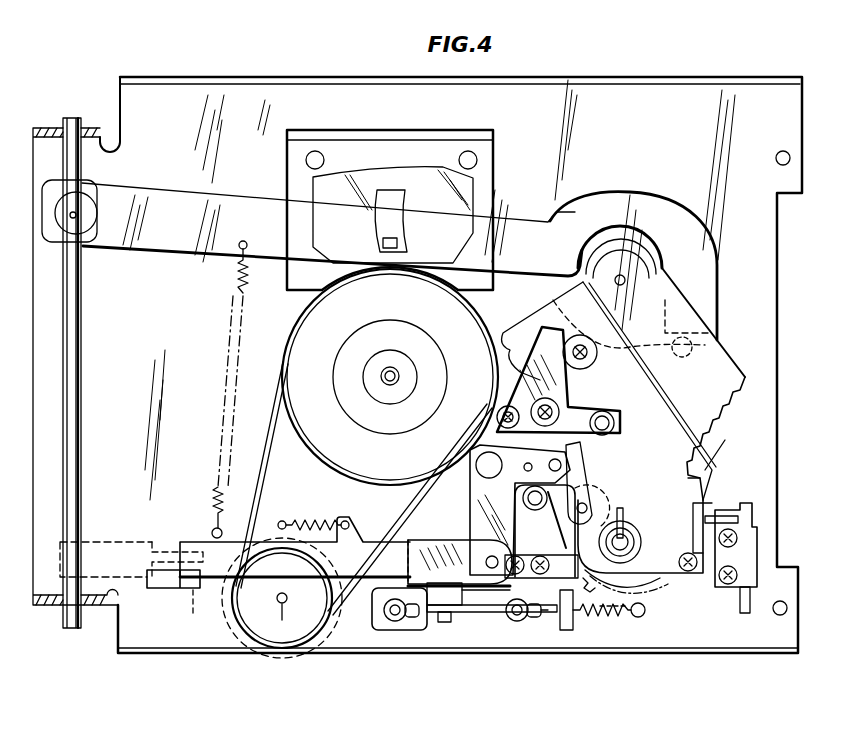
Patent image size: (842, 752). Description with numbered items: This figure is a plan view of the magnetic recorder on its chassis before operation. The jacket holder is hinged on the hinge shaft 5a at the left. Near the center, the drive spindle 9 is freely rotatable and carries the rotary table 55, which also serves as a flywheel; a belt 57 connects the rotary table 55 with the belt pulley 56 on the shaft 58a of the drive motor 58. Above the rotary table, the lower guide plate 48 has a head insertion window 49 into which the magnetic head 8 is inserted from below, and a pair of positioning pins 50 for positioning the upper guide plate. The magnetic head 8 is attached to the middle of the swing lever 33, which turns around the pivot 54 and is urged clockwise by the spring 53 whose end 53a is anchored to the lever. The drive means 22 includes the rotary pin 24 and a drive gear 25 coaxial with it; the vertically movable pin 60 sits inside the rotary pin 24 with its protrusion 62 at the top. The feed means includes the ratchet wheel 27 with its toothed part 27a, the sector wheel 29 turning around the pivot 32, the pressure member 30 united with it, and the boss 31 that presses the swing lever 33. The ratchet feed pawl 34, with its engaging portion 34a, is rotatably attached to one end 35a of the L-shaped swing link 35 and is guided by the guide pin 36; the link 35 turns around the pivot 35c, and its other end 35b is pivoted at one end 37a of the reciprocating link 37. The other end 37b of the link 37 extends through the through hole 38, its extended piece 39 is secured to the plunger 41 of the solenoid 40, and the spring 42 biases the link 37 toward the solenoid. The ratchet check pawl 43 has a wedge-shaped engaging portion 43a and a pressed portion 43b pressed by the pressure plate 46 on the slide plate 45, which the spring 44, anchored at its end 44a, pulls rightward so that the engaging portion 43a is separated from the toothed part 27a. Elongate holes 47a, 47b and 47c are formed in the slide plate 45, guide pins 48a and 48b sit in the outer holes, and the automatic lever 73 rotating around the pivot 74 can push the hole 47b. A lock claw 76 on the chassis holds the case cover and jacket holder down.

The hinge shaft 5a is at (73, 410).
The pivot 54 is at (78, 212).
The pivot 32 is at (615, 278).
The swing lever 33 is at (632, 193).
The boss 31 is at (700, 345).
The pressure member 30 is at (680, 297).
The ratchet wheel 27 is at (733, 435).
The toothed part 27a is at (733, 463).
The sector wheel 29 is at (527, 325).
The engaging portion 34a is at (567, 445).
The ratchet feed pawl 34 is at (580, 458).
The engaging portion 43a is at (585, 497).
The ratchet check pawl 43 is at (635, 497).
The drive means 22 is at (651, 498).
The rotary table 55 is at (332, 440).
The drive spindle 9 is at (390, 385).
The lower guide plate 48 is at (493, 158).
The positioning pins 50 is at (468, 151).
The magnetic head 8 is at (398, 243).
The head insertion window 49 is at (392, 190).
The one end of spring 53a is at (238, 288).
The spring 53 is at (225, 400).
The other end of reciprocating link 37b is at (214, 528).
The belt 57 is at (253, 513).
The belt pulley 56 is at (289, 650).
The drive motor 58 is at (237, 633).
The shaft 58a is at (282, 604).
The reciprocating link 37 is at (365, 540).
The spring 42 is at (336, 522).
The one end of reciprocating link 37a is at (468, 556).
The swing link 35 is at (470, 500).
The pivot 35c is at (483, 458).
The one end of swing link 35a is at (495, 445).
The guide pin 36 is at (523, 503).
The other end of swing link 35b is at (505, 528).
The pressure plate 46 is at (563, 565).
The elongate hole 47c is at (562, 621).
The slide plate 45 is at (368, 620).
The guide pin 48a is at (395, 621).
The elongate hole 47a is at (412, 618).
The pivot 74 is at (444, 623).
The elongate hole 47b is at (534, 618).
The automatic lever 73 is at (518, 622).
The guide pin 48b is at (548, 618).
The rotary pin 24 is at (642, 553).
The vertically movable pin 60 is at (636, 534).
The protrusion 62 is at (626, 512).
The drive gear 25 is at (675, 586).
The lock claw 76 is at (727, 517).
The spring 44 is at (612, 618).
The pressed portion 43b is at (662, 612).
The one end of spring 44a is at (628, 614).
The solenoid 40 is at (122, 540).
The plunger 41 is at (163, 547).
The through hole 38 is at (168, 588).
The extended piece 39 is at (198, 617).